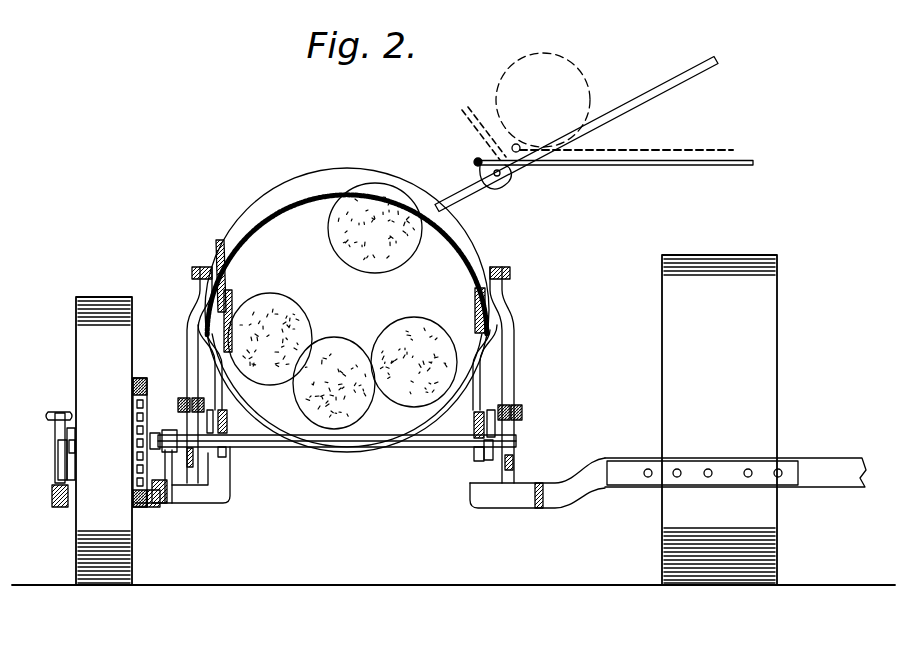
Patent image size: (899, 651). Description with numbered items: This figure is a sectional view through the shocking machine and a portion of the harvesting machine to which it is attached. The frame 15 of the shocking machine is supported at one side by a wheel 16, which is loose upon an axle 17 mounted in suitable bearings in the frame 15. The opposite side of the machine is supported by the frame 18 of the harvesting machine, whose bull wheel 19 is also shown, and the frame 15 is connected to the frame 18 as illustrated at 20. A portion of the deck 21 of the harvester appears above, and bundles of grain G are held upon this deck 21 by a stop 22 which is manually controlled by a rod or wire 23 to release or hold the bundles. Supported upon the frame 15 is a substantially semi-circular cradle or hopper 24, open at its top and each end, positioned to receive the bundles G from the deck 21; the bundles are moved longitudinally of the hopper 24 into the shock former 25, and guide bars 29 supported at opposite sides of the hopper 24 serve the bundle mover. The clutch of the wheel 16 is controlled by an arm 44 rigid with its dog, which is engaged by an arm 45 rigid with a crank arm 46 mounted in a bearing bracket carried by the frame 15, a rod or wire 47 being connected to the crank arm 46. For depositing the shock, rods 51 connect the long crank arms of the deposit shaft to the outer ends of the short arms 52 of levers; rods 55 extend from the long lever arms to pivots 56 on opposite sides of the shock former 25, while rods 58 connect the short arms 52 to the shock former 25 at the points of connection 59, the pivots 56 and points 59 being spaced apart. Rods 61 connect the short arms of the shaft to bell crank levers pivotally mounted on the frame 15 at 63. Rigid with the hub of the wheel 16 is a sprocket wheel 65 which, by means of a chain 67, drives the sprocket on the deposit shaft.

The frame 15 is at (210, 496).
The wheel 16 is at (82, 358).
The axle 17 is at (287, 448).
The frame of harvesting machine 18 is at (833, 484).
The bull wheel 19 is at (755, 377).
The connection 20 is at (606, 493).
The deck 21 is at (690, 76).
The stop 22 is at (468, 191).
The rod or wire 23 is at (598, 166).
The cradle or hopper 24 is at (216, 247).
The shock former 25 is at (336, 167).
The guide bars 29 is at (225, 297).
The arm 44 is at (68, 424).
The arm 45 is at (76, 452).
The crank arm 46 is at (58, 444).
The rod or wire 47 is at (53, 418).
The rods 51 is at (186, 405).
The short arms 52 is at (196, 405).
The rods 55 is at (192, 465).
The pivots 56 is at (189, 326).
The rods 58 is at (188, 356).
The points of connection 59 is at (192, 272).
The rods 61 is at (205, 412).
The pivot 63 is at (228, 431).
The sprocket wheel 65 is at (148, 506).
The chain 67 is at (137, 508).
The bundles of grain G is at (337, 217).